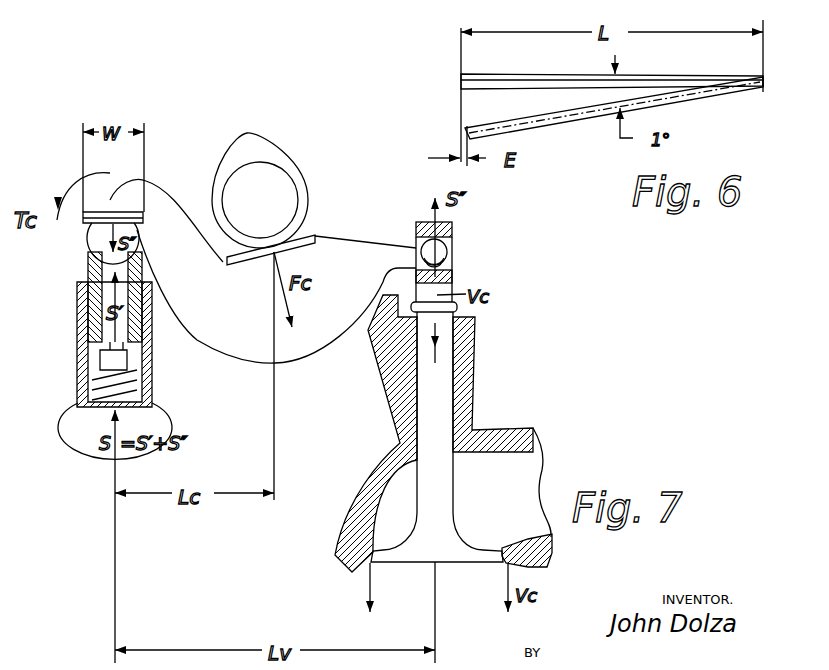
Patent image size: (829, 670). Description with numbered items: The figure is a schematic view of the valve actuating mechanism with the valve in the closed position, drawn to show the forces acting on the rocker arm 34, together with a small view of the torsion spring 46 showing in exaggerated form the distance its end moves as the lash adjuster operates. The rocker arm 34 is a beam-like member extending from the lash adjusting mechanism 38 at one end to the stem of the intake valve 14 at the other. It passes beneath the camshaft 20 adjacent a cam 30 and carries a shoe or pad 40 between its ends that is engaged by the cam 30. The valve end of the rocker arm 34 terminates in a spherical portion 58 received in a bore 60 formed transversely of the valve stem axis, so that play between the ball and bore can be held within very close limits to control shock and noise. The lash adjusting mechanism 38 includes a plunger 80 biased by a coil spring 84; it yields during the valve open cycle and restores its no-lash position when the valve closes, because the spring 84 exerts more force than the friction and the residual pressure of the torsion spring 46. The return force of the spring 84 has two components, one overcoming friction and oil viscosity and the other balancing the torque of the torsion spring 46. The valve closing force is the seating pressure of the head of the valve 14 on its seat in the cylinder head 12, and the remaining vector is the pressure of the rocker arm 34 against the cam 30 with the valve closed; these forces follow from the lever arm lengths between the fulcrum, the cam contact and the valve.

In FIG. 7, the cylinder head 12 is at (474, 410).
In FIG. 7, the intake valve 14 is at (483, 550).
In FIG. 7, the camshaft 20 is at (280, 177).
In FIG. 7, the cam 30 is at (260, 137).
In FIG. 7, the rocker arm 34 is at (355, 238).
In FIG. 7, the lash adjusting mechanism 38 is at (88, 268).
In FIG. 7, the shoe or pad 40 is at (313, 233).
In FIG. 6, the torsion spring 46 is at (757, 87).
In FIG. 7, the torsion spring 46 is at (93, 218).
In FIG. 7, the spherical portion 58 is at (447, 252).
In FIG. 7, the bore 60 is at (452, 236).
In FIG. 7, the plunger 80 is at (92, 318).
In FIG. 7, the coil spring 84 is at (102, 373).